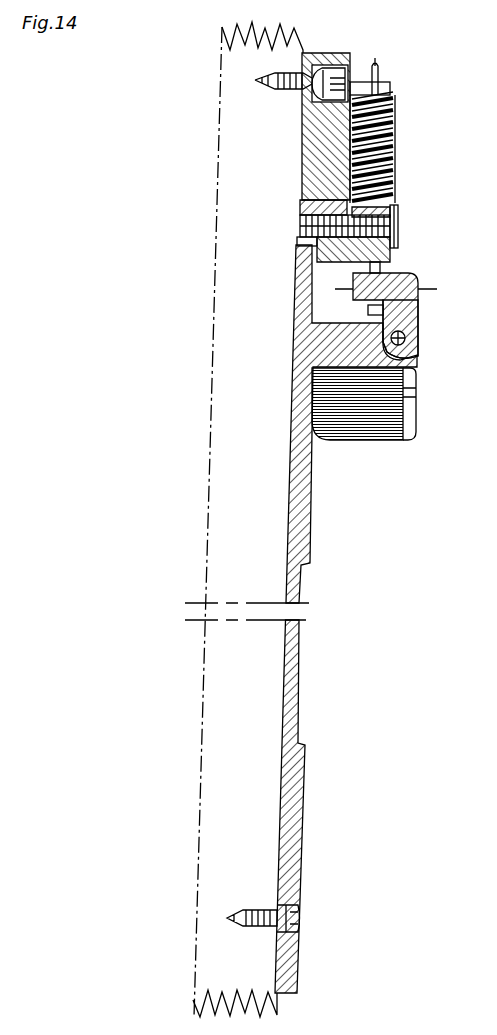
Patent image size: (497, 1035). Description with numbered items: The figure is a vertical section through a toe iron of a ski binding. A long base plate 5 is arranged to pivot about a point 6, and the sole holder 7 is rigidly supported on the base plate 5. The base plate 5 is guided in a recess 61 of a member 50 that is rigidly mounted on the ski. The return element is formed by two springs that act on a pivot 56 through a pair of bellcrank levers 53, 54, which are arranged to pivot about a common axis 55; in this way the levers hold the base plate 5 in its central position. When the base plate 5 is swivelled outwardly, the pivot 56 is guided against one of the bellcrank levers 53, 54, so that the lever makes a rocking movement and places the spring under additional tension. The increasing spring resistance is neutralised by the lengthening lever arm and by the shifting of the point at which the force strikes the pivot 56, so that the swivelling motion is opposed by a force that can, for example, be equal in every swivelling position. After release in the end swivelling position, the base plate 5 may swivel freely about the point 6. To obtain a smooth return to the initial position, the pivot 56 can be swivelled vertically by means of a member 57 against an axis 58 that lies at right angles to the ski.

The base plate 5 is at (291, 510).
The point 6 is at (287, 802).
The sole holder 7 is at (300, 361).
The member 50 is at (312, 136).
The bellcrank lever 53 is at (302, 200).
The bellcrank lever 54 is at (386, 250).
The common axis 55 is at (393, 230).
The pivot 56 is at (375, 293).
The member 57 is at (395, 316).
The axis 58 is at (410, 342).
The recess 61 is at (300, 243).